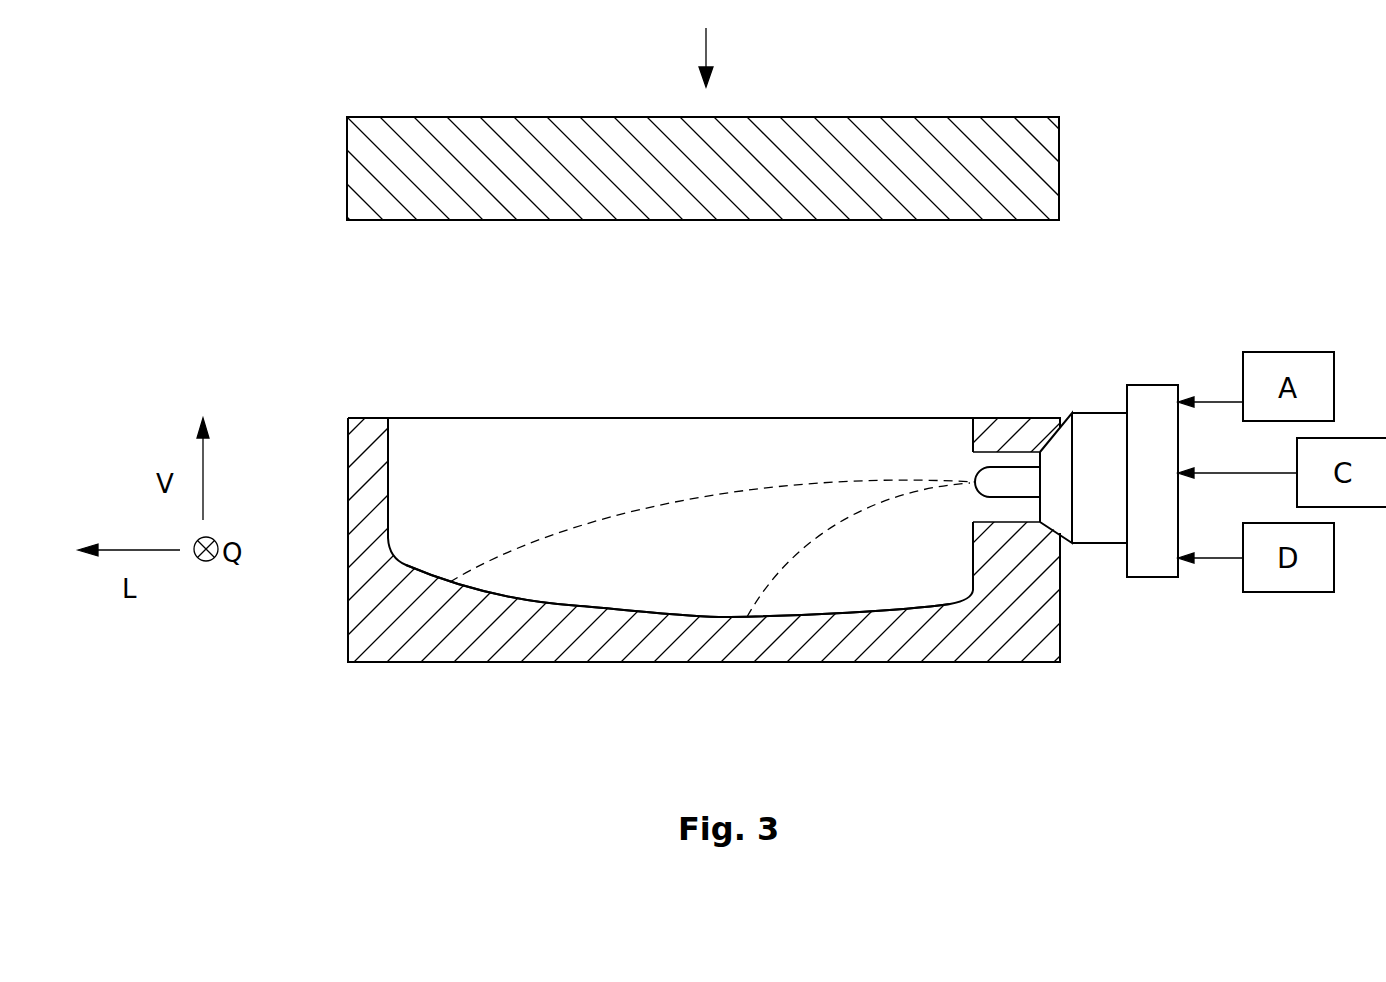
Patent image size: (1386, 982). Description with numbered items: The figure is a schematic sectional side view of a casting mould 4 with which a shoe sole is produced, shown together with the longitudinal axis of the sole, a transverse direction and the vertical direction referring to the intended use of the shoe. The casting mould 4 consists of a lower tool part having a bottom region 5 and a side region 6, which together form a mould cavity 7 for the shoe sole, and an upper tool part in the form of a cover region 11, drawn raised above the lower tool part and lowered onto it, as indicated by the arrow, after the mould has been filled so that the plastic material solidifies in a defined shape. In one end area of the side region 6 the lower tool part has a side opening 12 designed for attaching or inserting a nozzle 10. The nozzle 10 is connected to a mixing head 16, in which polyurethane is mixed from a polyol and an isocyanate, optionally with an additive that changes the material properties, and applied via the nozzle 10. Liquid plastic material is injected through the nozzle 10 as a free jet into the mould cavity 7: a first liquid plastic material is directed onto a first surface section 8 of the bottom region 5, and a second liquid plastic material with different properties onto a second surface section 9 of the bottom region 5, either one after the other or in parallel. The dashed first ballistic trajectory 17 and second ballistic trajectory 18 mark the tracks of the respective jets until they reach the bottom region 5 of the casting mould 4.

The casting mould 4 is at (347, 357).
The bottom region 5 is at (727, 630).
The side region 6 is at (360, 463).
The mould cavity 7 is at (708, 575).
The first surface section 8 is at (487, 485).
The second surface section 9 is at (778, 467).
The nozzle 10 is at (1005, 480).
The cover region 11 is at (1013, 137).
The side opening 12 is at (1005, 508).
The mixing head 16 is at (1155, 597).
The first ballistic trajectory 17 is at (713, 490).
The second ballistic trajectory 18 is at (837, 527).